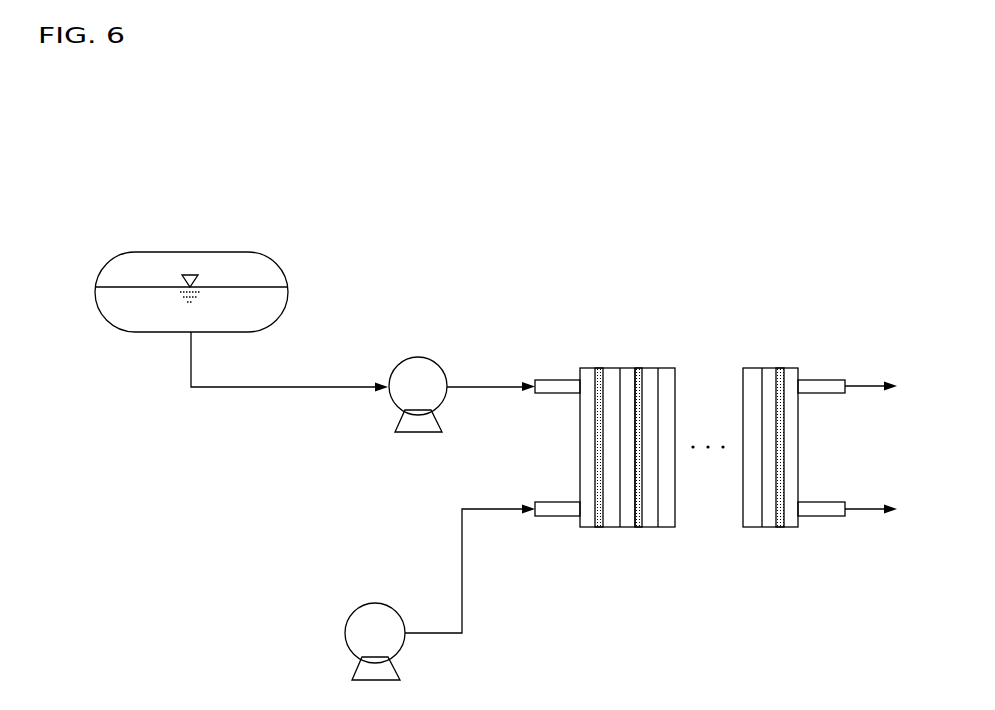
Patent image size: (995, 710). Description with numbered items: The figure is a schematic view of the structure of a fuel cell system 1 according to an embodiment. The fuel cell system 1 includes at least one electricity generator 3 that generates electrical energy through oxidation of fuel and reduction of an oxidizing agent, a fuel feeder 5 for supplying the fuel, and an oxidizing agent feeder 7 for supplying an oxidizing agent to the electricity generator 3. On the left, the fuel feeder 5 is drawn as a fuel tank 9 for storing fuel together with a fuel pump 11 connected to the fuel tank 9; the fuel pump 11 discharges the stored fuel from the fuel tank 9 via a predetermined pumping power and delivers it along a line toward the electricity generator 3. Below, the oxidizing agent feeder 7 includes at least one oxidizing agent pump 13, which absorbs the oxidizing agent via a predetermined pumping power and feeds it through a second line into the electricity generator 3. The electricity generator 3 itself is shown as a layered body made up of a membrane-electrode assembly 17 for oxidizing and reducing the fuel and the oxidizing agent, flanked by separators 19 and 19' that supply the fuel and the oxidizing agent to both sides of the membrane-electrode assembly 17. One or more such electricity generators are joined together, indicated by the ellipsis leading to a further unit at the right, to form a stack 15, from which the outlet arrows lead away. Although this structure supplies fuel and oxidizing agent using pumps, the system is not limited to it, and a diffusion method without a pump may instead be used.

The fuel cell system 1 is at (793, 177).
The electricity generator 3 is at (567, 620).
The fuel feeder 5 is at (118, 242).
The oxidizing agent feeder 7 is at (323, 626).
The fuel tank 9 is at (195, 252).
The fuel pump 11 is at (418, 357).
The oxidizing agent pump 13 is at (365, 605).
The stack 15 is at (748, 335).
The membrane-electrode assembly 17 is at (627, 518).
The separator 19 is at (589, 495).
The separator 19' is at (660, 495).